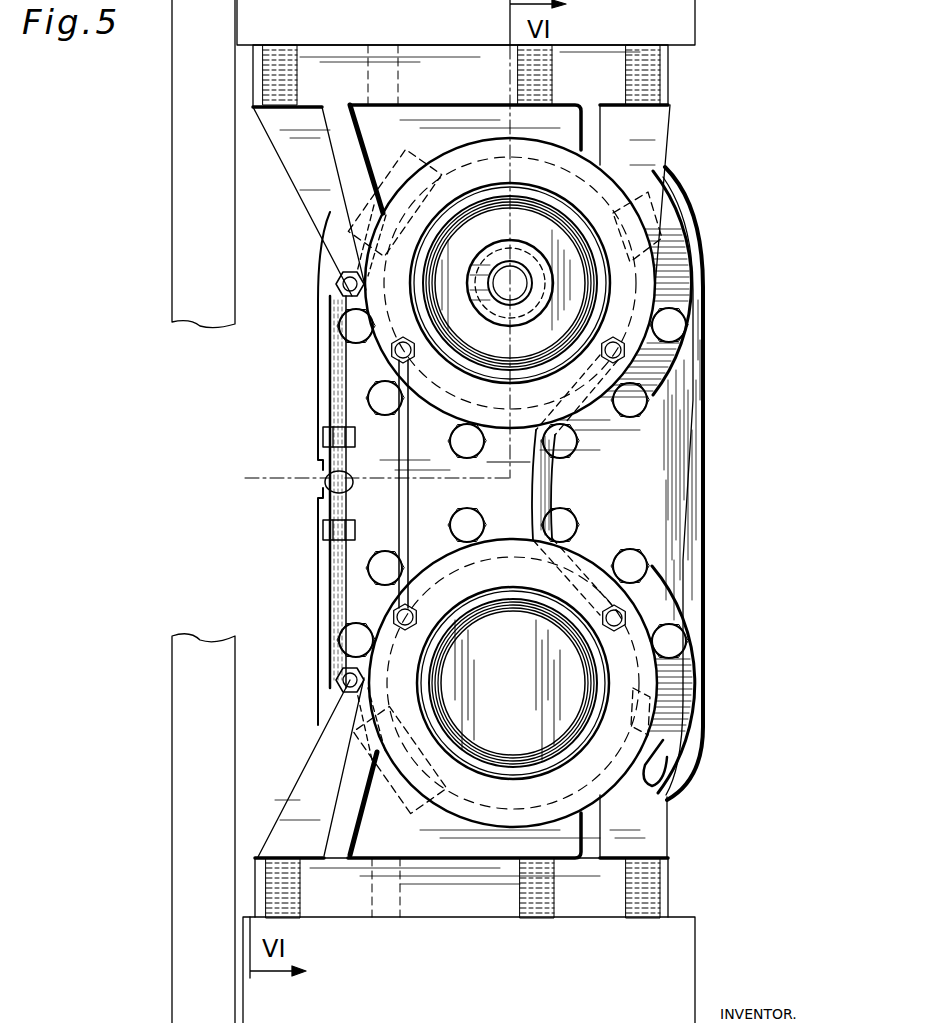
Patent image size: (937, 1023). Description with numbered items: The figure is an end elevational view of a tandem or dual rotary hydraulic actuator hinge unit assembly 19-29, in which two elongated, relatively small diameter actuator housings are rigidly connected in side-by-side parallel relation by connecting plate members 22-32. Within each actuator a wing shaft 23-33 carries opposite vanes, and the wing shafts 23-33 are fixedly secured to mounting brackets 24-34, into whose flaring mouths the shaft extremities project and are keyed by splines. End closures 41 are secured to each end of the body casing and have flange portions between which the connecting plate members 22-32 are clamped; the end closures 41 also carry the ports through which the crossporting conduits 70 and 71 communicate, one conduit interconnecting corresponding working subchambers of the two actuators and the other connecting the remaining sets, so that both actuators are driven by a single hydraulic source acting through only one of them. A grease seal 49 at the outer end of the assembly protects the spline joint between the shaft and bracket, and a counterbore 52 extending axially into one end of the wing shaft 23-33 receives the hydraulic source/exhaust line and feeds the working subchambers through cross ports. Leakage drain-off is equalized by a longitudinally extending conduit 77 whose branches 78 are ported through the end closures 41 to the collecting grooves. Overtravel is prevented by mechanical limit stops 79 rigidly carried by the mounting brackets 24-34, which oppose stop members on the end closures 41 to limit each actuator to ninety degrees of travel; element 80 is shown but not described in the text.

The dual rotary hydraulic actuator hinge unit assembly 19-29 is at (726, 406).
The connecting plate members 22-32 is at (692, 545).
The wing shafts 23-33 is at (570, 302).
The mounting brackets 24-34 is at (660, 124).
The end closures 41 is at (680, 282).
The grease seal 49 is at (480, 203).
The counterbore 52 is at (523, 290).
The conduit 70 is at (402, 498).
The conduit 71 is at (540, 475).
The longitudinally extending conduit 77 is at (325, 486).
The branches 78 is at (330, 385).
The mechanical limit stops 79 is at (375, 213).
The lug 80 is at (640, 200).